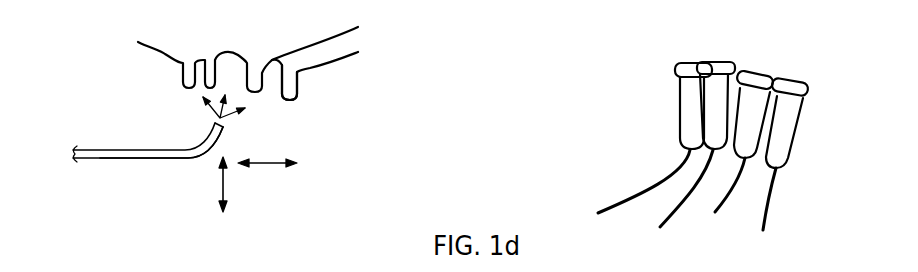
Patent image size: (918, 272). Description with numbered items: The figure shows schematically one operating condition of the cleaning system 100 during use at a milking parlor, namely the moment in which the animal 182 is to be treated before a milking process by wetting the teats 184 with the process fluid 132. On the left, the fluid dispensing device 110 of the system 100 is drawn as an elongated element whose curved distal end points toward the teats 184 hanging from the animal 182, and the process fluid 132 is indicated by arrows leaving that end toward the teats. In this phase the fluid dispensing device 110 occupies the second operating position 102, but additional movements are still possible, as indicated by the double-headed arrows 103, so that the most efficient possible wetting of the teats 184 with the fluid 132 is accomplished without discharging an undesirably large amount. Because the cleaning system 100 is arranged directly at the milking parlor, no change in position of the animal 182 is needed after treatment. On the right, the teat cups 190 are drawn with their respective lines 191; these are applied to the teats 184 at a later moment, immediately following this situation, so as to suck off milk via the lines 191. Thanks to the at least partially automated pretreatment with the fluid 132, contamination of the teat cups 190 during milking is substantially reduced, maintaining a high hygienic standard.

The cleaning system 100 is at (133, 147).
The fluid dispensing device 110 is at (117, 147).
The second operating position 102 is at (183, 162).
The process fluid 132 is at (213, 118).
The additional movements 103 is at (225, 182).
The animal 182 is at (363, 35).
The teats 184 is at (307, 88).
The teat cups 190 is at (800, 138).
The lines 191 is at (772, 205).